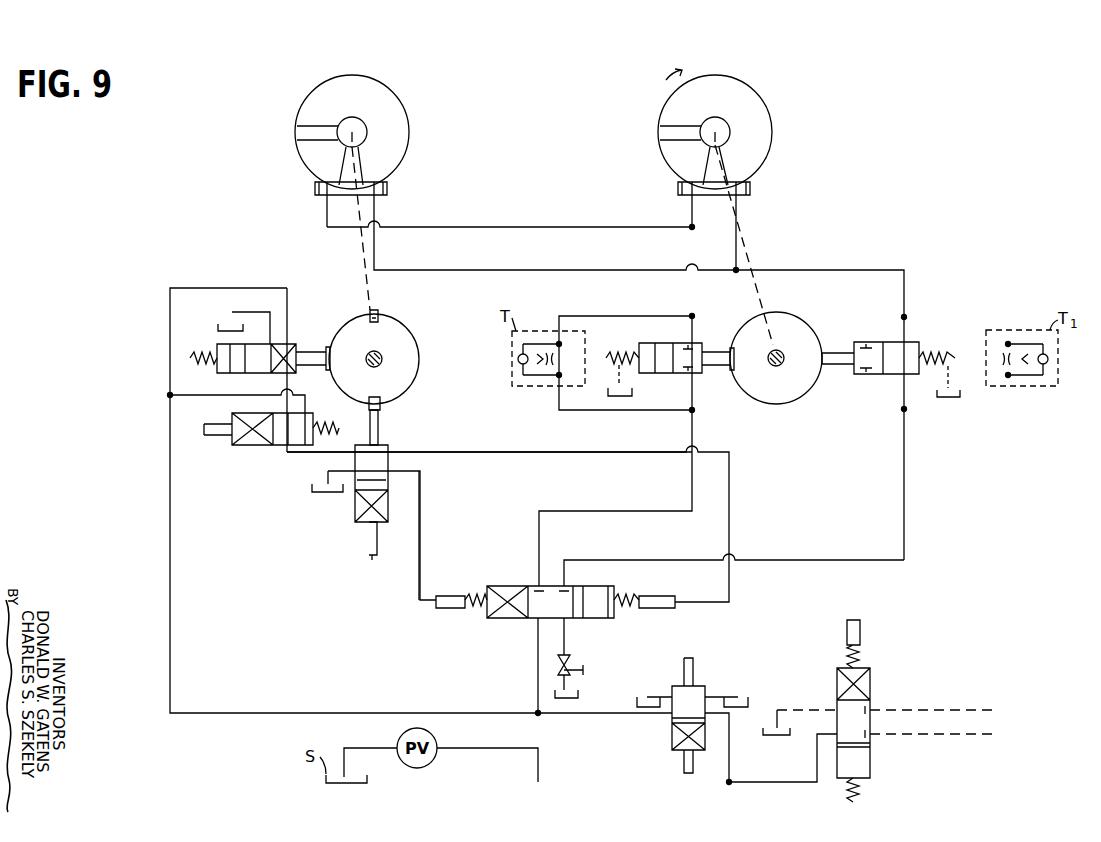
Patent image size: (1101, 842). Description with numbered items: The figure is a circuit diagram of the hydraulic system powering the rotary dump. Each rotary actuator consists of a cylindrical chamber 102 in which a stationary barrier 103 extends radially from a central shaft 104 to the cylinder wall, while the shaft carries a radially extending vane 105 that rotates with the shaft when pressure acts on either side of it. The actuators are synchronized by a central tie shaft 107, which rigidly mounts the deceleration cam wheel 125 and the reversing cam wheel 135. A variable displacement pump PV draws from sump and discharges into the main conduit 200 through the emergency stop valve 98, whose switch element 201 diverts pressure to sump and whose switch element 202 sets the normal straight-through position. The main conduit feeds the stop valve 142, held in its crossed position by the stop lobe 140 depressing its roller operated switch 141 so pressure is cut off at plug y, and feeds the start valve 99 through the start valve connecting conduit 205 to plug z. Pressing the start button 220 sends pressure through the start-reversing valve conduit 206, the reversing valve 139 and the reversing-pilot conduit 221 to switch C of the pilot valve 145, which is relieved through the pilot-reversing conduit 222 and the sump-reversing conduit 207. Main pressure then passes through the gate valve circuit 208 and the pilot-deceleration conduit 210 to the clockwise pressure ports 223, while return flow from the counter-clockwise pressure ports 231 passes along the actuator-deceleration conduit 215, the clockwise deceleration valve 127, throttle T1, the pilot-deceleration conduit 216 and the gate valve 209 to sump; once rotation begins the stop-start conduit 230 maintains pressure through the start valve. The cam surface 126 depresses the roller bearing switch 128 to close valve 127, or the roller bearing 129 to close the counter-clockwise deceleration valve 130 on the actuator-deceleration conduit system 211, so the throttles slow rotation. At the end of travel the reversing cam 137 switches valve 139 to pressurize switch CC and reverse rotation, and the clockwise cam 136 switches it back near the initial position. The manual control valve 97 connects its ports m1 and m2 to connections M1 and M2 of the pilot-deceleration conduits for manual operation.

The cylindrical chamber 102 is at (372, 94).
The central shaft 104 is at (367, 128).
The vane 105 is at (305, 128).
The stationary barrier 103 is at (352, 162).
The clockwise pressure ports 223 is at (316, 190).
The counter-clockwise pressure ports 231 is at (387, 189).
The actuator-deceleration conduit 215 is at (376, 208).
The actuator-deceleration conduit system 211 is at (461, 227).
The main conduit 200 is at (258, 288).
The stop-start conduit 230 is at (288, 380).
The stop valve 142 is at (232, 313).
The stop lobe 140 is at (328, 347).
The roller operated switch 141 is at (326, 330).
The reversing cam wheel 135 is at (398, 332).
The reversing cam 137 is at (376, 312).
The central tie shaft 107 is at (382, 362).
The clockwise cam 136 is at (381, 405).
The start valve connecting conduit 205 is at (222, 396).
The start valve 99 is at (263, 452).
The start button 220 is at (215, 436).
The start-reversing valve conduit 206 is at (287, 456).
The sump-reversing conduit 207 is at (328, 485).
The reversing valve 139 is at (350, 520).
The pilot-reversing conduit 222 is at (422, 520).
The reversing-pilot conduit 221 is at (500, 452).
The pilot-deceleration conduit 210 is at (660, 511).
The pilot-deceleration conduit 216 is at (905, 478).
The pilot valve 145 is at (519, 626).
The gate valve circuit 208 is at (536, 660).
The gate valve 209 is at (569, 660).
The counter-clockwise deceleration valve 130 is at (697, 374).
The roller bearing 129 is at (728, 350).
The deceleration cam wheel 125 is at (776, 372).
The cam surface 126 is at (733, 370).
The roller bearing switch 128 is at (846, 352).
The clockwise deceleration valve 127 is at (890, 342).
The emergency stop valve 98 is at (711, 686).
The switch element 202 is at (693, 672).
The mechanical position switch element 201 is at (684, 760).
The manual control valve 97 is at (871, 770).